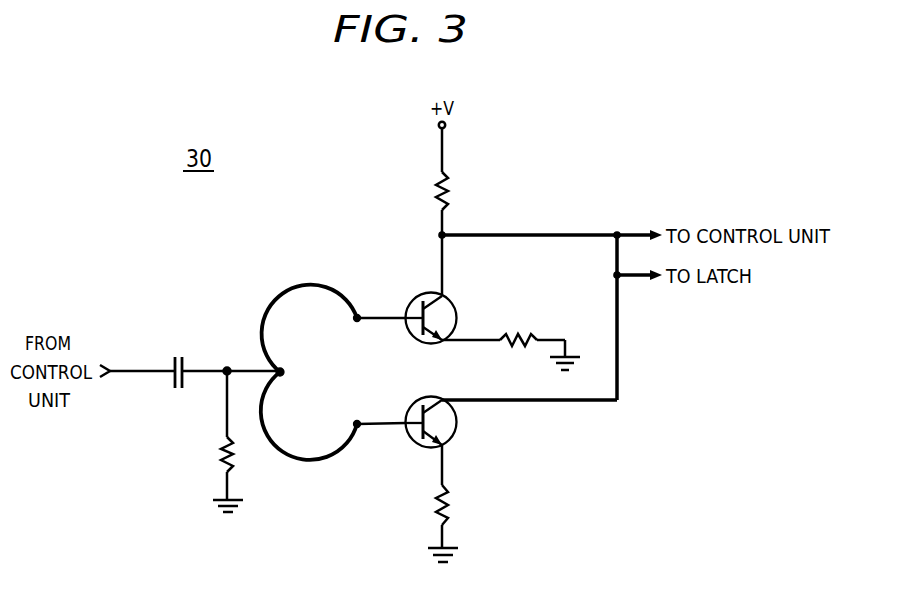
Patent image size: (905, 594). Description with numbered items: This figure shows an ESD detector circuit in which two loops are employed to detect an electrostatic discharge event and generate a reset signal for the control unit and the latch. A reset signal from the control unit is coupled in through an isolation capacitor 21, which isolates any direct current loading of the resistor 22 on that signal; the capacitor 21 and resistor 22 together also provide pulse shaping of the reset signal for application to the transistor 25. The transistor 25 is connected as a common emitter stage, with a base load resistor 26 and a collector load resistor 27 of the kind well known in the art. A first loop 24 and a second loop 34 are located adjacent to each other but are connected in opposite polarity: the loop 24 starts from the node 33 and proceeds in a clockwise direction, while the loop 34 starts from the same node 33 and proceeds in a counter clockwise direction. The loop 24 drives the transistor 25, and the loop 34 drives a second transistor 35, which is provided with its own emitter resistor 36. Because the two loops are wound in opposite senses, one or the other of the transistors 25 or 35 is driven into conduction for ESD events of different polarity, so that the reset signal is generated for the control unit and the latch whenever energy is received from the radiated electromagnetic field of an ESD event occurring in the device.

The isolation capacitor 21 is at (178, 352).
The resistor 22 is at (219, 456).
The loop 24 is at (309, 282).
The transistor 25 is at (455, 304).
The base load resistor 26 is at (512, 335).
The collector load resistor 27 is at (449, 188).
The node 33 is at (284, 372).
The second loop 34 is at (300, 462).
The second transistor 35 is at (458, 433).
The emitter resistor 36 is at (455, 505).